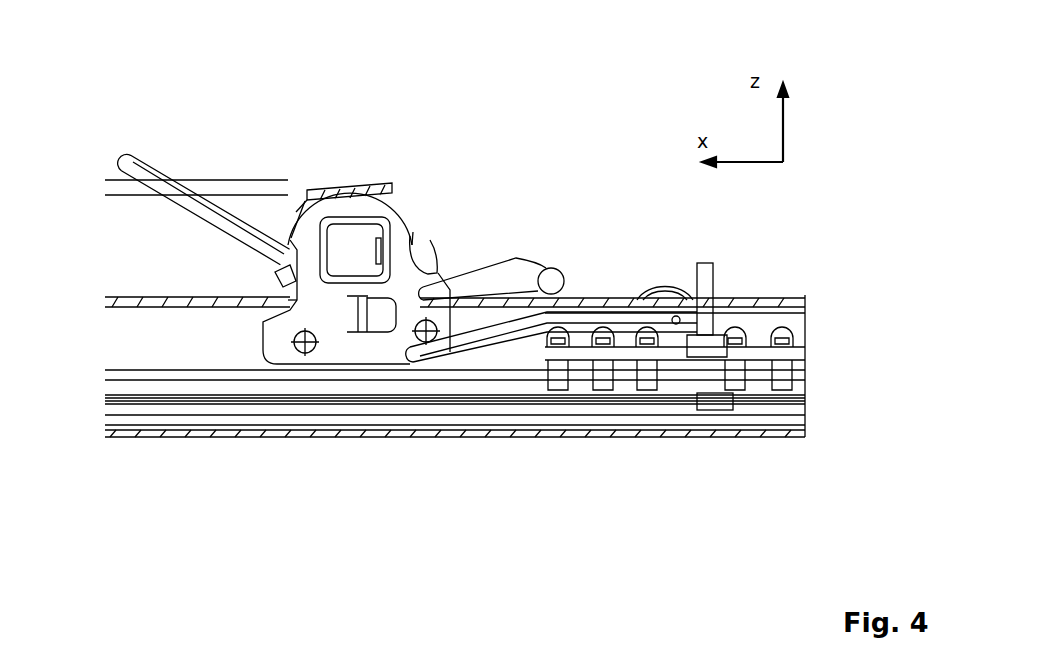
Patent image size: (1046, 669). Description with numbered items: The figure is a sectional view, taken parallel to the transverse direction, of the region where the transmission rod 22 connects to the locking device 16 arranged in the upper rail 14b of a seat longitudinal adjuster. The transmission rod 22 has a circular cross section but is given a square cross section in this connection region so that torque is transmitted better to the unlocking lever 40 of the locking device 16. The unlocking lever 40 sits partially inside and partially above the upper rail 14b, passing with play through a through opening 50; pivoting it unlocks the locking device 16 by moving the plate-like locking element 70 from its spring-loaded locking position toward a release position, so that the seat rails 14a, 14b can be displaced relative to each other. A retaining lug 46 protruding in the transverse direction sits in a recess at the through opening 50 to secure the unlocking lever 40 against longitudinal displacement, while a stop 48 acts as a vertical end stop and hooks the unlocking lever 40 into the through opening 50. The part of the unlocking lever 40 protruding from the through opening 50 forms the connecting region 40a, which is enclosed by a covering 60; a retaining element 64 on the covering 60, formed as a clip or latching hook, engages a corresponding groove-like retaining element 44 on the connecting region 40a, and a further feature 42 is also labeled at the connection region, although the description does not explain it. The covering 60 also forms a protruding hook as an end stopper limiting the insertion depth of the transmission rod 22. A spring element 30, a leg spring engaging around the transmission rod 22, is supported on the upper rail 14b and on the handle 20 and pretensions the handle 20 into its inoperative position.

The seat rail 14a is at (312, 430).
The upper rail 14b is at (152, 298).
The locking device 16 is at (612, 378).
The handle 20 is at (253, 205).
The transmission rod 22 is at (370, 222).
The spring element 30 is at (197, 203).
The unlocking lever 40 is at (368, 350).
The connecting region 40a is at (305, 245).
The frame 42 is at (392, 228).
The retaining element 44 is at (410, 238).
The retaining lug 46 is at (362, 313).
The stop 48 is at (423, 290).
The through opening 50 is at (283, 302).
The covering 60 is at (388, 190).
The retaining element 64 is at (432, 272).
The locking element 70 is at (637, 352).